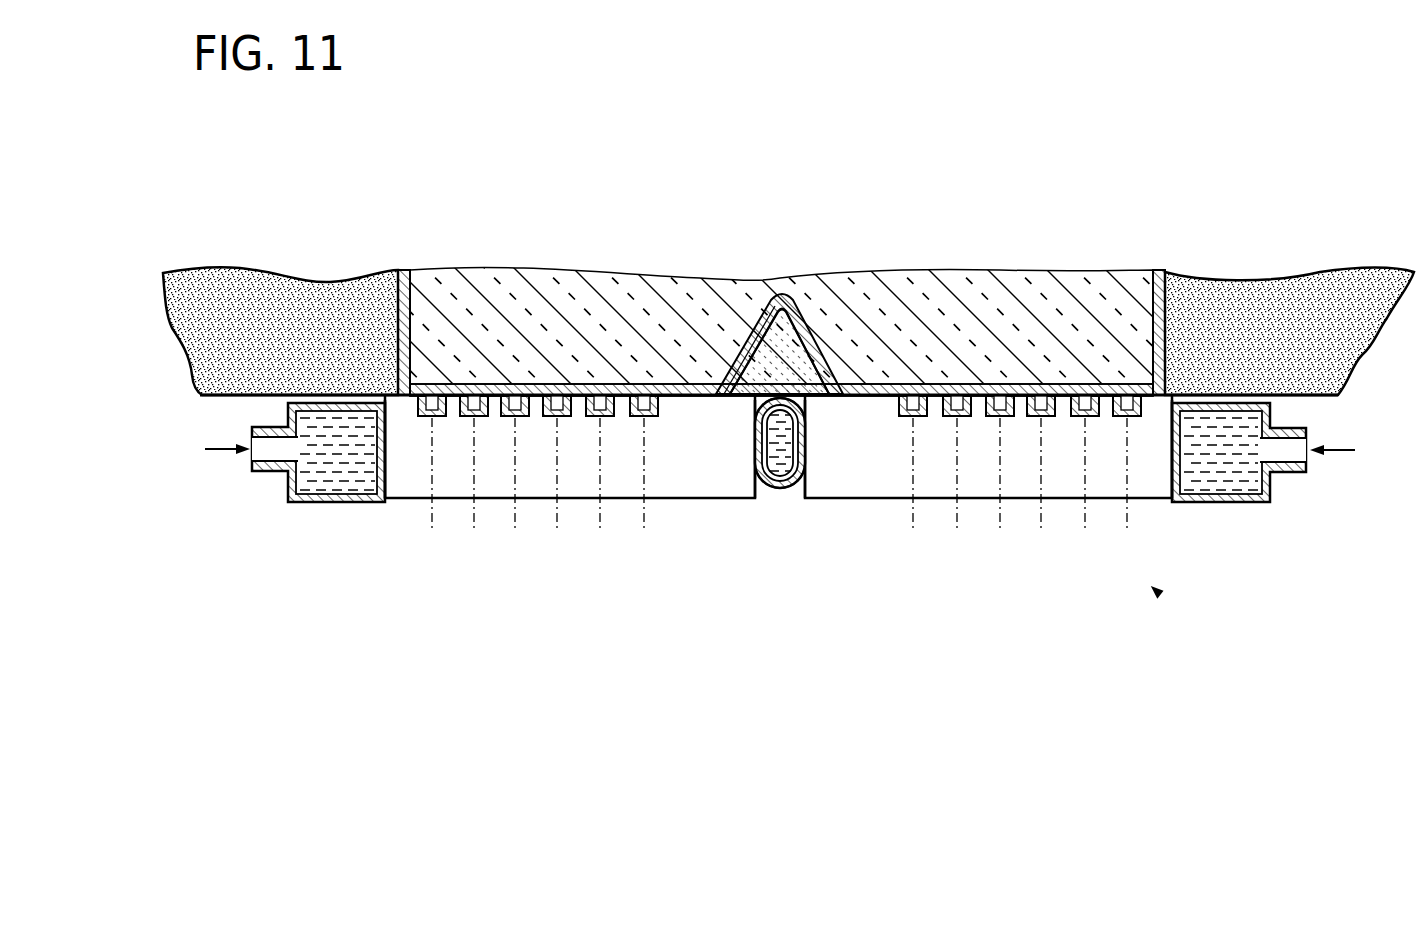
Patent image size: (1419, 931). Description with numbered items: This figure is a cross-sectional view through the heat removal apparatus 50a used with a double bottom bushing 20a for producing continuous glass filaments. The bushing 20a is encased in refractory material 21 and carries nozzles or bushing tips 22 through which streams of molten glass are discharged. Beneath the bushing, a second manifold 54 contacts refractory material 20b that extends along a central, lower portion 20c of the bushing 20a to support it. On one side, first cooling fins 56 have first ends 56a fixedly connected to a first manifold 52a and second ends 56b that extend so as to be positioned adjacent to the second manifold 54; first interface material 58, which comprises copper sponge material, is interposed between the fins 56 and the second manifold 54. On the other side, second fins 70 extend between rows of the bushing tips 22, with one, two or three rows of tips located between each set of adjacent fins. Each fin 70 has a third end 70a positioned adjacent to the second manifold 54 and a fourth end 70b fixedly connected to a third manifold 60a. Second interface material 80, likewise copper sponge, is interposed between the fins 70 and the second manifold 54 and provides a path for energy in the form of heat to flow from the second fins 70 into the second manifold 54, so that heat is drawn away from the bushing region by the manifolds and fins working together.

The double bottom bushing 20a is at (1158, 275).
The refractory material 20b is at (783, 340).
The central lower portion 20c is at (762, 320).
The refractory material 21 is at (1293, 303).
The bushing tips 22 is at (628, 413).
The heat removal apparatus 50a is at (780, 527).
The first manifold 52a is at (330, 502).
The second manifold 54 is at (786, 487).
The first cooling fins 56 is at (560, 505).
The first ends 56a is at (412, 483).
The second ends 56b is at (722, 485).
The first interface material 58 is at (771, 525).
The third manifold 60a is at (1245, 503).
The second fins 70 is at (1025, 503).
The third end 70a is at (823, 482).
The fourth end 70b is at (1143, 488).
The second interface material 80 is at (800, 486).